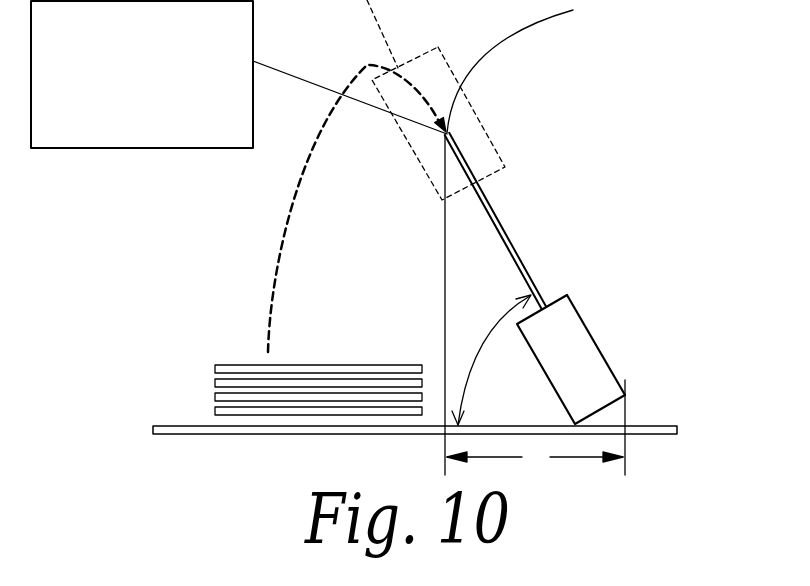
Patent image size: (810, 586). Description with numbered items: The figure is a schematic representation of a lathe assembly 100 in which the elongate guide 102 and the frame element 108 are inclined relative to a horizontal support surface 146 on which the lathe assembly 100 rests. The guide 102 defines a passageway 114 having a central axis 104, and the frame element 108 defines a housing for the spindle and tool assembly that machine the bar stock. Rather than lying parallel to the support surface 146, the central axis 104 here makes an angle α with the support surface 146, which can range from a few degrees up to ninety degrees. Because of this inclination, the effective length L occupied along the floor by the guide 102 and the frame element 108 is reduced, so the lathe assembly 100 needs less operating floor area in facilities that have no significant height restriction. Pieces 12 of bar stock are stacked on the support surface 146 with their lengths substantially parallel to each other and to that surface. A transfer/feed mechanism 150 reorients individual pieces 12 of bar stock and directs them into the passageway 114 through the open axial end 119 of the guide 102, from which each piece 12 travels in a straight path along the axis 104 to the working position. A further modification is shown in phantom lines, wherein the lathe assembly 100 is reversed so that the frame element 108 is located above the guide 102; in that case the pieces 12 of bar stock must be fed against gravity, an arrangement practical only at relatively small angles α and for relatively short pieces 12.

The piece of bar stock 12 is at (237, 372).
The lathe assembly 100 is at (565, 197).
The elongate guide 102 is at (533, 270).
The central axis 104 is at (392, 42).
The frame element 108 is at (593, 338).
The passageway 114 is at (496, 208).
The open axial end 119 is at (536, 66).
The horizontal support surface 146 is at (172, 425).
The transfer/feed mechanism 150 is at (146, 141).